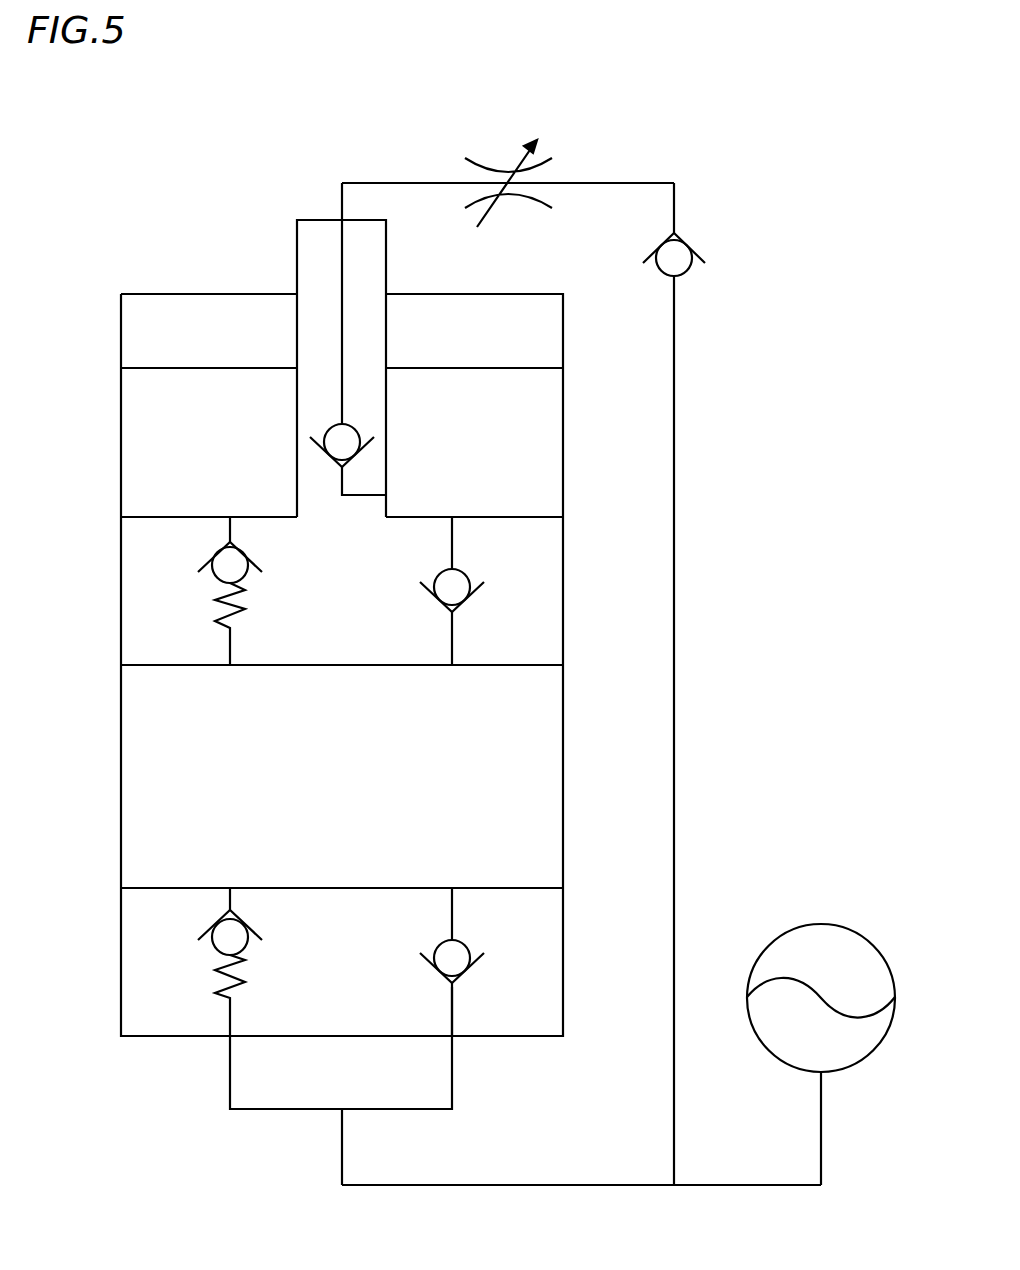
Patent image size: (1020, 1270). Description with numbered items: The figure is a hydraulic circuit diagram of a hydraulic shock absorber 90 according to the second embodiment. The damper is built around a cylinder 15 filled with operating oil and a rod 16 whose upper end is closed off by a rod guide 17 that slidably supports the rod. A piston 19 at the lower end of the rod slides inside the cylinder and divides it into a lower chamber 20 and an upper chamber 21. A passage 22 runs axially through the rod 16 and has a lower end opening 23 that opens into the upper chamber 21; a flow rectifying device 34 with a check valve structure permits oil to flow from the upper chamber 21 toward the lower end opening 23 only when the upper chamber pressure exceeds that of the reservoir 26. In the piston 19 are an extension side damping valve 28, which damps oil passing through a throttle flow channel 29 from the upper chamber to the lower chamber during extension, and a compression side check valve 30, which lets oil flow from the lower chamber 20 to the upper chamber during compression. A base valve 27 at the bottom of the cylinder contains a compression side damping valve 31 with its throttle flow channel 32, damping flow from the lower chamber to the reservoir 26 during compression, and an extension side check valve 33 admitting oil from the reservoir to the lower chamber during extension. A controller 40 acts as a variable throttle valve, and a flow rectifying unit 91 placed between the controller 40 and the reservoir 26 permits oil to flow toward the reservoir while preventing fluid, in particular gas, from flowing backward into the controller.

The cylinder 15 is at (563, 833).
The rod 16 is at (297, 248).
The rod guide 17 is at (552, 337).
The piston 19 is at (550, 597).
The lower chamber 20 is at (535, 792).
The upper chamber 21 is at (540, 455).
The passage 22 is at (343, 260).
The lower end opening 23 is at (386, 495).
The reservoir 26 is at (845, 928).
The base valve 27 is at (547, 973).
The extension side damping valve 28 is at (260, 563).
The throttle flow channel 29 is at (240, 610).
The compression side check valve 30 is at (430, 600).
The compression side damping valve 31 is at (248, 930).
The throttle flow channel 32 is at (240, 975).
The extension side check valve 33 is at (430, 957).
The flow rectifying device 34 is at (310, 440).
The controller 40 is at (497, 172).
The hydraulic shock absorber 90 is at (773, 188).
The flow rectifying unit 91 is at (693, 252).